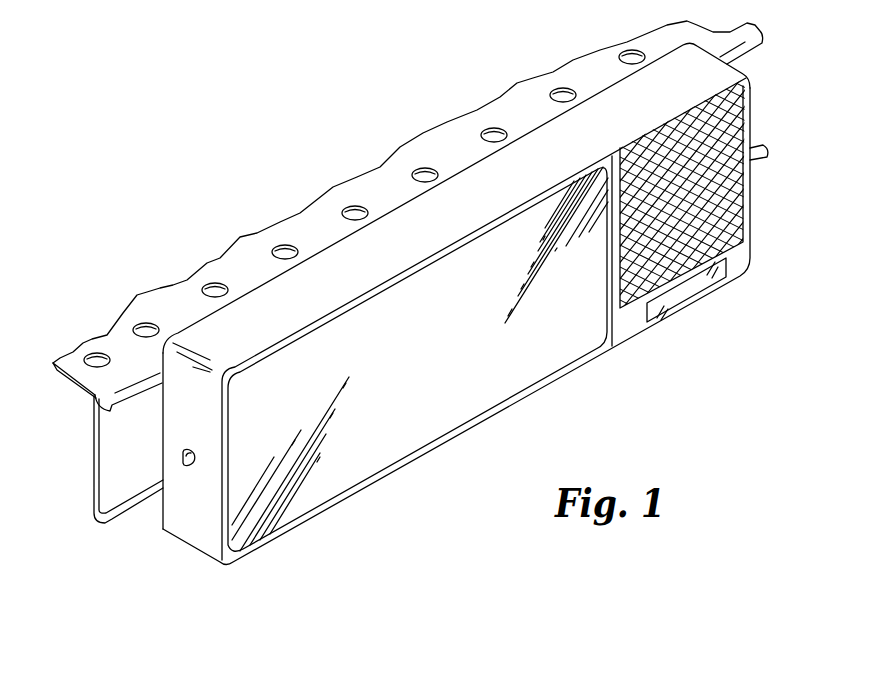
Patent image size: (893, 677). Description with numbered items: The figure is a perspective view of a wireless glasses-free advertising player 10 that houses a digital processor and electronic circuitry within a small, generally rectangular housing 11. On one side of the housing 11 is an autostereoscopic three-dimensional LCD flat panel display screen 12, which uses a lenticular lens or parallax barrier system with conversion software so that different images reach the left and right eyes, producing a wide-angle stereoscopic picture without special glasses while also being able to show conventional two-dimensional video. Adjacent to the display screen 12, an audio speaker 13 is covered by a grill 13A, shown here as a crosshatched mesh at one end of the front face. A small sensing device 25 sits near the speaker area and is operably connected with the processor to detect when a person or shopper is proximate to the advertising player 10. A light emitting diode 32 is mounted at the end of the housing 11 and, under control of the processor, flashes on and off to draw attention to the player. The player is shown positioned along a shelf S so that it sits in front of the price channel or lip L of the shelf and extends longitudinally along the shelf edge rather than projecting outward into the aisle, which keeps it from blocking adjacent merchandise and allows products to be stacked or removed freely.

The wireless 3D and 2D advertising player 10 is at (643, 408).
The housing 11 is at (201, 537).
The autostereoscopic 3D LCD flat panel display screen 12 is at (432, 389).
The audio speaker 13 is at (724, 213).
The grill 13A is at (681, 201).
The sensing device 25 is at (683, 297).
The light emitting diodes 32 is at (180, 462).
The shelf S is at (308, 213).
The lip L is at (93, 463).